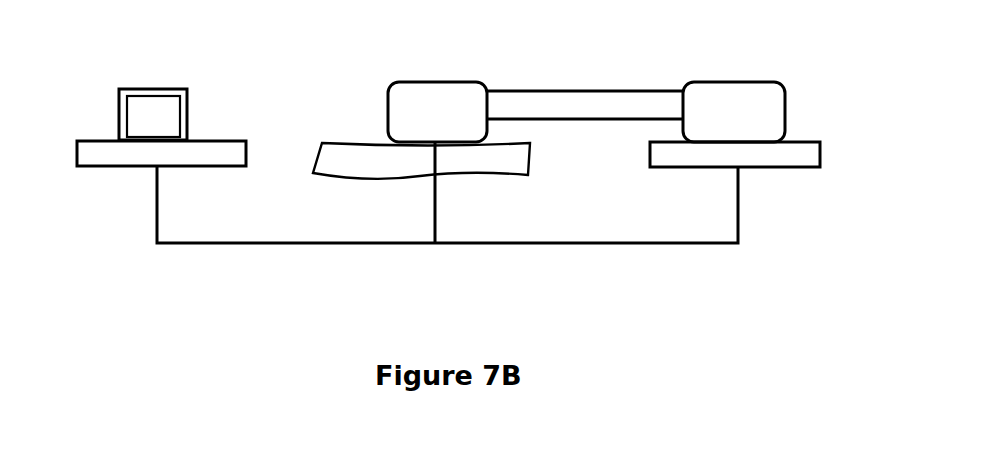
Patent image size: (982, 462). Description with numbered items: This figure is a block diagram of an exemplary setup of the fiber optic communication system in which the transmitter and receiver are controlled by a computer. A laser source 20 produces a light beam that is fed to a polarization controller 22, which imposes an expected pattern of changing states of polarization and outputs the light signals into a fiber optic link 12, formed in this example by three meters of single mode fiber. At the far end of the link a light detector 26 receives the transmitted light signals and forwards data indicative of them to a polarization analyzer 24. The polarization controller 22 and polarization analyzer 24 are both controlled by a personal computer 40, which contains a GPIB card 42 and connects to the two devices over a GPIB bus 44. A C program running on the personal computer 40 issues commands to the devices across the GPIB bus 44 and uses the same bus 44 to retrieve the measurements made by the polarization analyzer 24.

The fiber optic link 12 is at (545, 85).
The laser source 20 is at (440, 80).
The polarization controller 22 is at (345, 175).
The polarization analyzer 24 is at (772, 170).
The light detector 26 is at (757, 82).
The personal computer 40 is at (167, 87).
The GPIB card 42 is at (93, 166).
The GPIB bus 44 is at (363, 248).